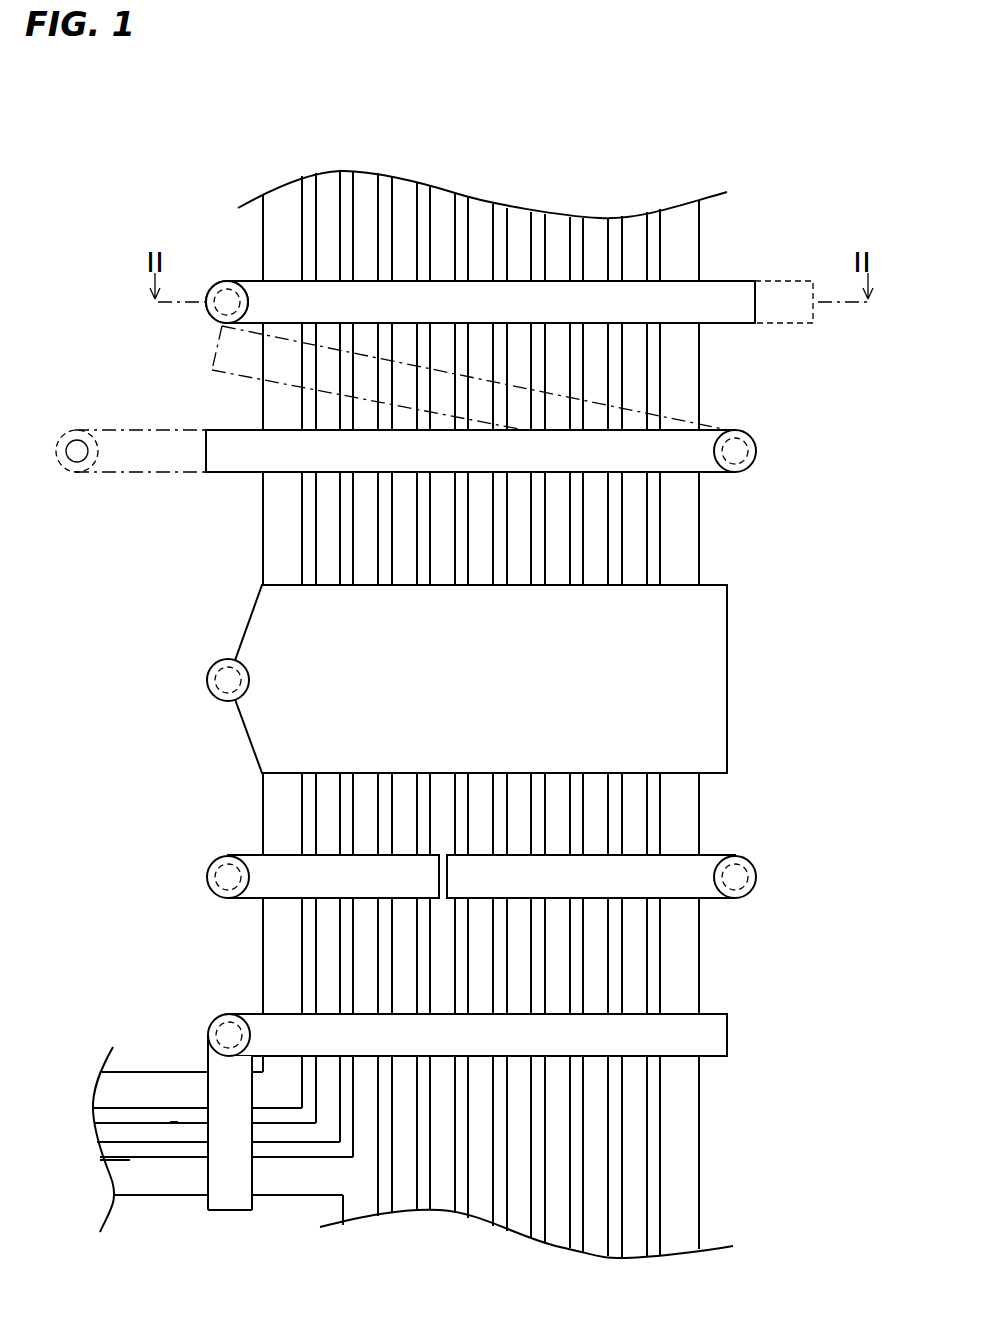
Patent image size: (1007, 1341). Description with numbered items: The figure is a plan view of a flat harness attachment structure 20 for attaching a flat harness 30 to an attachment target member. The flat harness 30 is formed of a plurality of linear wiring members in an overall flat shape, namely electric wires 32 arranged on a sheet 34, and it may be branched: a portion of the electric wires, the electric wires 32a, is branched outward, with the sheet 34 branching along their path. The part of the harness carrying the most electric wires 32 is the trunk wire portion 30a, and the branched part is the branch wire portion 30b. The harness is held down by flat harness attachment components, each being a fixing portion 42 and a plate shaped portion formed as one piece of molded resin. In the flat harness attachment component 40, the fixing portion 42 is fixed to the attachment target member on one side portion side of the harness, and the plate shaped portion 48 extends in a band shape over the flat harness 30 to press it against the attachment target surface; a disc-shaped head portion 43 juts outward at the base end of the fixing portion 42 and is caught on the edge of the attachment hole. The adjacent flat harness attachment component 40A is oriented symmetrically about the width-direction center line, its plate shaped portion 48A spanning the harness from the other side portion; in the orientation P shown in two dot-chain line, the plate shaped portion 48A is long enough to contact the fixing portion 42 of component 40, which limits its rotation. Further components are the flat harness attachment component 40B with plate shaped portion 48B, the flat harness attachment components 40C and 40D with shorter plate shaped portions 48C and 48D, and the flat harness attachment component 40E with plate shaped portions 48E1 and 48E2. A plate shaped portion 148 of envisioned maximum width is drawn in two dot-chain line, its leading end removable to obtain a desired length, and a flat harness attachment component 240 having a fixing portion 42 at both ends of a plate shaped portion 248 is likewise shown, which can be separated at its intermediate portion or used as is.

The flat harness attachment structure 20 is at (683, 189).
The flat harness 30 is at (445, 714).
The trunk wire portion 30a is at (705, 963).
The branch wire portion 30b is at (149, 1073).
The electric wires 32 is at (585, 1125).
The electric wires 32a is at (173, 1125).
The sheet 34 is at (707, 1145).
The flat harness attachment component 40 is at (509, 261).
The flat harness attachment component 40A is at (407, 451).
The flat harness attachment component 40B is at (513, 679).
The flat harness attachment component 40C is at (314, 880).
The flat harness attachment component 40D is at (616, 844).
The flat harness attachment component 40E is at (499, 1122).
The fixing portion 42 is at (208, 1027).
The head portion 43 is at (250, 303).
The plate shaped portion 48 is at (680, 297).
The plate shaped portion 48A is at (228, 440).
The plate shaped portion 48B is at (730, 622).
The plate shaped portion 48C is at (287, 890).
The plate shaped portion 48D is at (636, 870).
The plate shaped portion 48E1 is at (733, 1035).
The plate shaped portion 48E2 is at (231, 1200).
The plate shaped portion 148 is at (800, 280).
The flat harness attachment component 240 is at (77, 488).
The plate shaped portion 248 is at (136, 477).
The orientation P is at (222, 331).